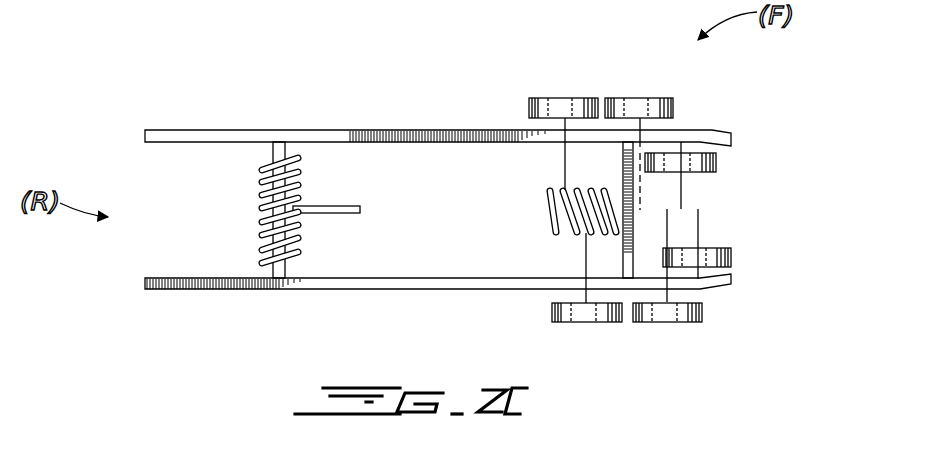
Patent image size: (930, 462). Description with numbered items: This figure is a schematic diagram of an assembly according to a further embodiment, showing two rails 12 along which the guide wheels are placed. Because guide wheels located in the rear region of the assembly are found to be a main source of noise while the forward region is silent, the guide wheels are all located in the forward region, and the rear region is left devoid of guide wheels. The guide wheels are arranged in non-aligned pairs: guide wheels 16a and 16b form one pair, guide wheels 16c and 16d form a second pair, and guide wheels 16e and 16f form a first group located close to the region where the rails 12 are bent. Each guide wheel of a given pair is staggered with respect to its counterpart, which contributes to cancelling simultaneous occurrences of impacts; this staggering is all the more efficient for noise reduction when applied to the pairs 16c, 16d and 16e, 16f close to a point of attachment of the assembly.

The rails 12 is at (198, 129).
The guide wheel 16a is at (558, 98).
The guide wheel 16b is at (592, 322).
The guide wheel 16c is at (674, 107).
The guide wheel 16d is at (702, 312).
The guide wheel 16e is at (716, 162).
The guide wheel 16f is at (731, 257).